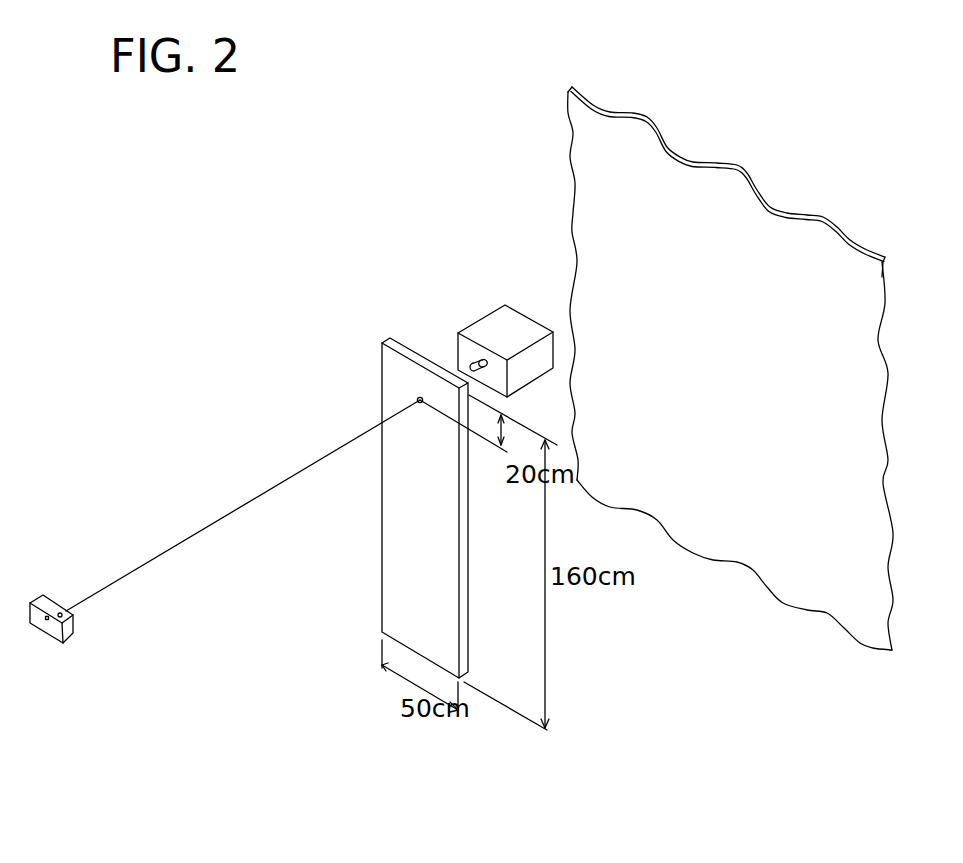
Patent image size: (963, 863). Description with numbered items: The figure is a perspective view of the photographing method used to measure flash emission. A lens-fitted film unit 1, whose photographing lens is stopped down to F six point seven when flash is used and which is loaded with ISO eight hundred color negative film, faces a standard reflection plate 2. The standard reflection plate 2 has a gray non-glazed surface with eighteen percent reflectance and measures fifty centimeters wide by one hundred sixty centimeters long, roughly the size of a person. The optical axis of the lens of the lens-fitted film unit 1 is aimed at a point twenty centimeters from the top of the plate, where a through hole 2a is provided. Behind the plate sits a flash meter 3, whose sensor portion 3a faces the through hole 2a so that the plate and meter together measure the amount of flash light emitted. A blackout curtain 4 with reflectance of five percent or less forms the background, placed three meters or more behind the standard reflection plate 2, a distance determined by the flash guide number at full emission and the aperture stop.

The lens-fitted film unit 1 is at (52, 598).
The standard reflection plate 2 is at (382, 365).
The through hole 2a is at (420, 397).
The flash meter 3 is at (497, 303).
The sensor portion 3a is at (476, 362).
The blackout curtain 4 is at (572, 218).